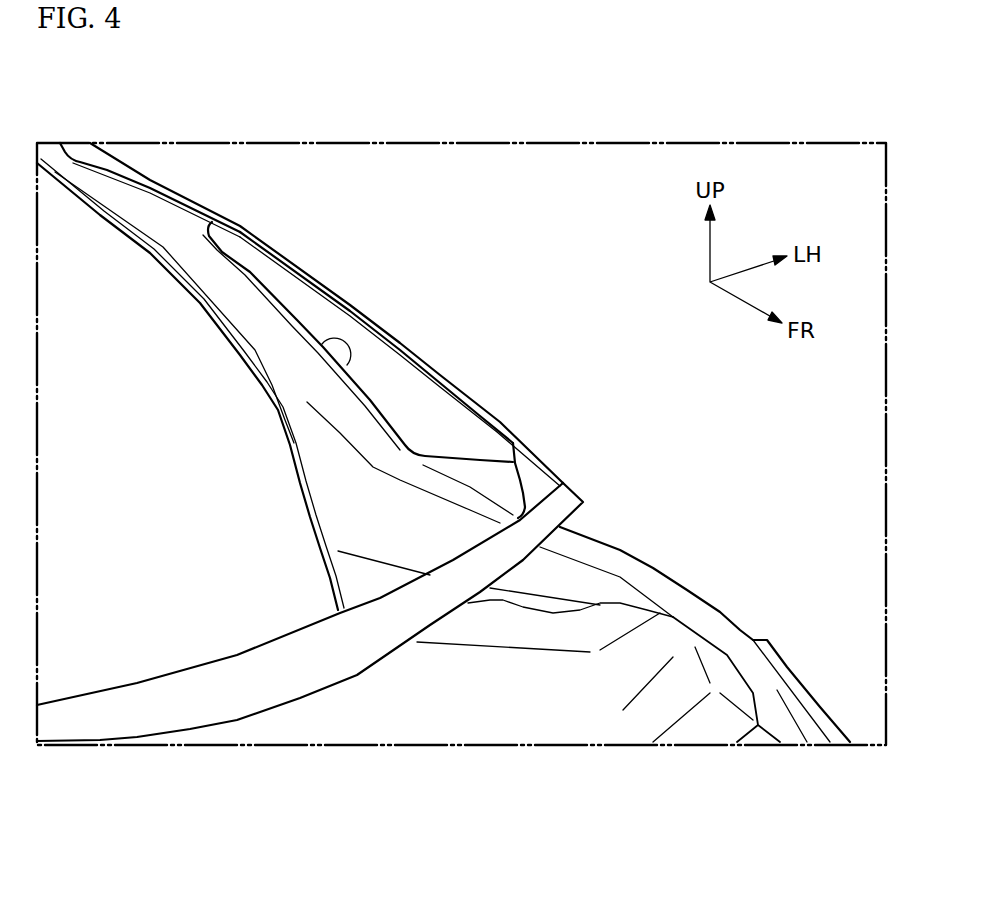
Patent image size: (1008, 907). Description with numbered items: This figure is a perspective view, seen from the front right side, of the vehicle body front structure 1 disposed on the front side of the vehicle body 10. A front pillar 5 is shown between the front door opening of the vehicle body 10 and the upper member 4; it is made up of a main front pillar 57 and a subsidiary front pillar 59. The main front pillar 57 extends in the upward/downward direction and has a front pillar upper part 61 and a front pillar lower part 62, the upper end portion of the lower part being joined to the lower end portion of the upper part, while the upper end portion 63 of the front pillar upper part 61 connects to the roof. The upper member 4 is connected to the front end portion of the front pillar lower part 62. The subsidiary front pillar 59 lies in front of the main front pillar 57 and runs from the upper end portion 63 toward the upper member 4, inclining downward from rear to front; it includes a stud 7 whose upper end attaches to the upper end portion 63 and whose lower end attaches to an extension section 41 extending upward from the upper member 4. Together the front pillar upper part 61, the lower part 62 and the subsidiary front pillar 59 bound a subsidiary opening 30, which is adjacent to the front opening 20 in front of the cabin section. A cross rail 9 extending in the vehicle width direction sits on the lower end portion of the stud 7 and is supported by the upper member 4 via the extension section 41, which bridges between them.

The vehicle body front structure 1 is at (338, 242).
The upper member 4 is at (660, 575).
The front pillar 5 is at (407, 321).
The stud 7 is at (450, 375).
The cross rail 9 is at (237, 688).
The vehicle body 10 is at (640, 112).
The front opening 20 is at (226, 654).
The subsidiary opening 30 is at (343, 370).
The extension section 41 is at (520, 465).
The main front pillar 57 is at (179, 356).
The subsidiary front pillar 59 is at (505, 392).
The front pillar upper part 61 is at (168, 247).
The front pillar lower part 62 is at (350, 517).
The upper end portion 63 is at (97, 158).